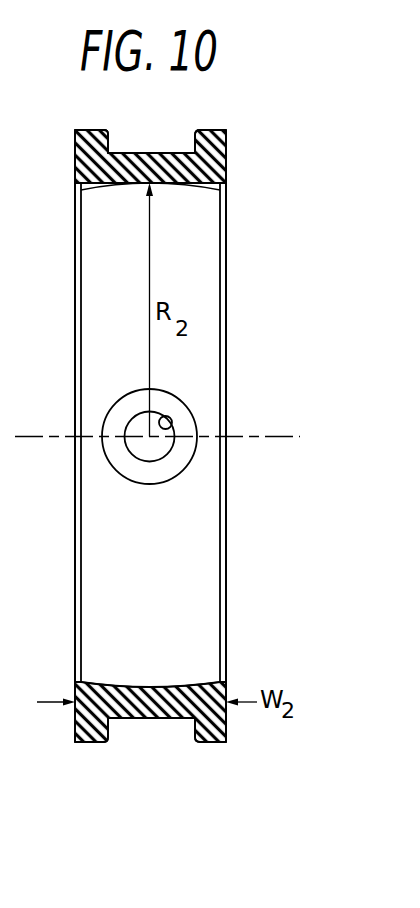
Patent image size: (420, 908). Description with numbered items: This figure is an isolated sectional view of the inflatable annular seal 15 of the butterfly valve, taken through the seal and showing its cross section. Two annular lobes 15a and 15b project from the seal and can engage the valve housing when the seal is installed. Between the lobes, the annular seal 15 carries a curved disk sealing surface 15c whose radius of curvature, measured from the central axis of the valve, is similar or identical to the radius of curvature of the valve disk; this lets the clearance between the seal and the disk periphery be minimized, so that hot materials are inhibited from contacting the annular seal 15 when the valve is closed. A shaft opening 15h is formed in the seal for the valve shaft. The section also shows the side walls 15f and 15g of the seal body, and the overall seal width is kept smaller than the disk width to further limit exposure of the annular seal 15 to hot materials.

The inflatable annular seal 15 is at (75, 333).
The annular lobe 15a is at (93, 130).
The annular lobe 15b is at (213, 130).
The curved disk sealing surface 15c is at (175, 184).
The rim wall 15f is at (75, 168).
The rim wall 15g is at (222, 167).
The shaft opening 15h is at (176, 428).